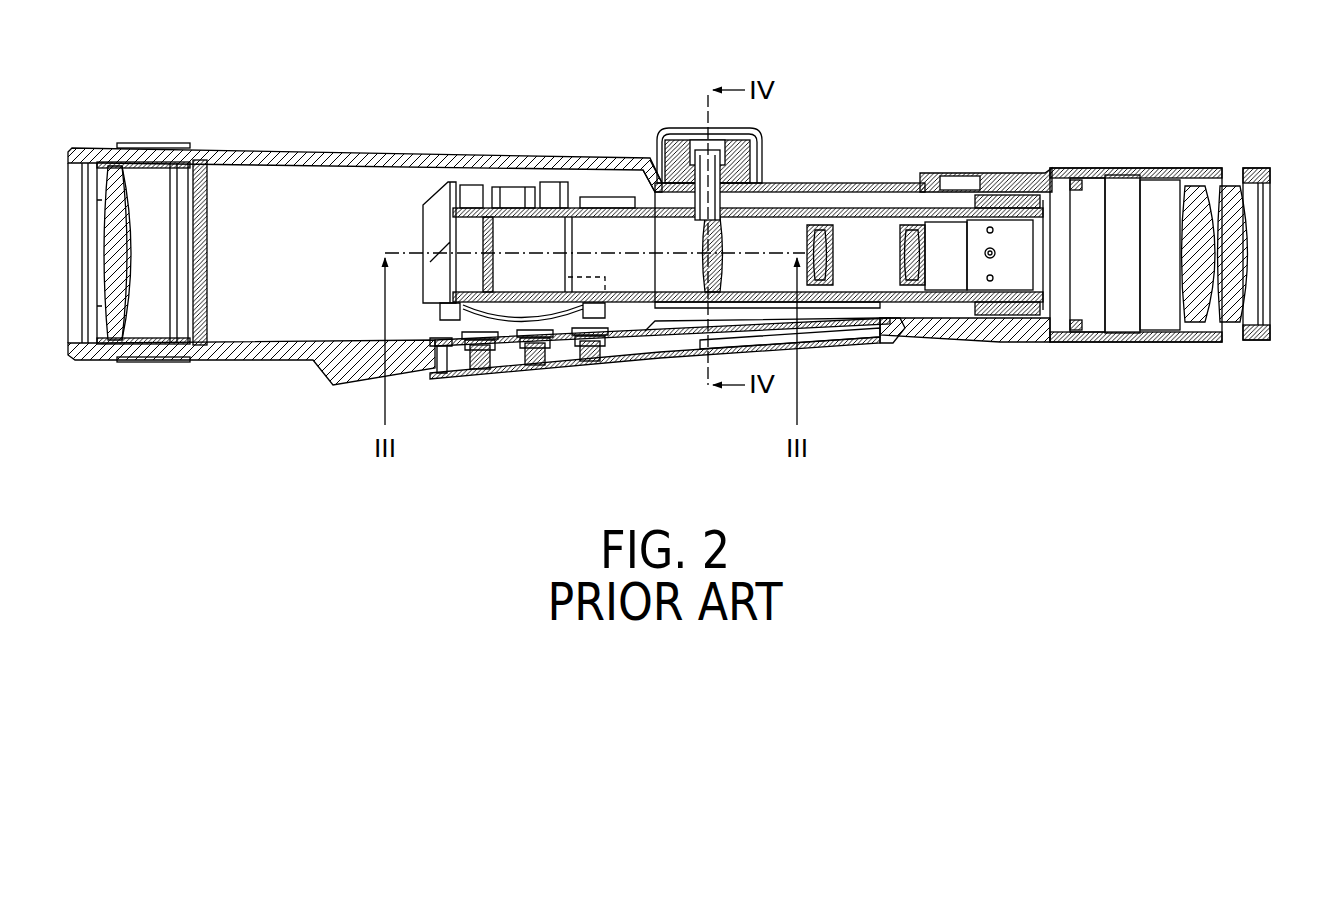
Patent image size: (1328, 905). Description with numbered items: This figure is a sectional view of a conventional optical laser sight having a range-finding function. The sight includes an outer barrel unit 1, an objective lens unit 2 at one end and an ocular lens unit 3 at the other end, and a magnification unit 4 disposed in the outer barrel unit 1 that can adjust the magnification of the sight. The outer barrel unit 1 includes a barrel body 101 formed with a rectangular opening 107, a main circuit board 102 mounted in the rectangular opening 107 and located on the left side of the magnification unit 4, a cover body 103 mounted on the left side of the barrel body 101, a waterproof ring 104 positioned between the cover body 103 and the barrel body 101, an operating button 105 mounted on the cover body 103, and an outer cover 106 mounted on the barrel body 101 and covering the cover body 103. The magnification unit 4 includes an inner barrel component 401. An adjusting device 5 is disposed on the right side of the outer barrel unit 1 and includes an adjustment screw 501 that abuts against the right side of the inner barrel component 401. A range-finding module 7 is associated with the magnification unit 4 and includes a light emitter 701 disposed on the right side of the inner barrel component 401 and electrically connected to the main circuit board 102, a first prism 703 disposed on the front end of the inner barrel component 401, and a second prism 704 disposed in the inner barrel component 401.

The outer barrel unit 1 is at (559, 210).
The barrel body 101 is at (288, 157).
The main circuit board 102 is at (620, 340).
The cover body 103 is at (828, 345).
The waterproof ring 104 is at (893, 338).
The operating button 105 is at (527, 372).
The outer cover 106 is at (855, 342).
The rectangular opening 107 is at (430, 374).
The objective lens unit 2 is at (68, 232).
The ocular lens unit 3 is at (1273, 234).
The magnification unit 4 is at (829, 175).
The inner barrel component 401 is at (650, 185).
The adjusting device 5 is at (705, 111).
The adjustment screw 501 is at (702, 160).
The range-finding module 7 is at (741, 191).
The light emitter 701 is at (580, 188).
The first prism 703 is at (433, 190).
The second prism 704 is at (610, 230).